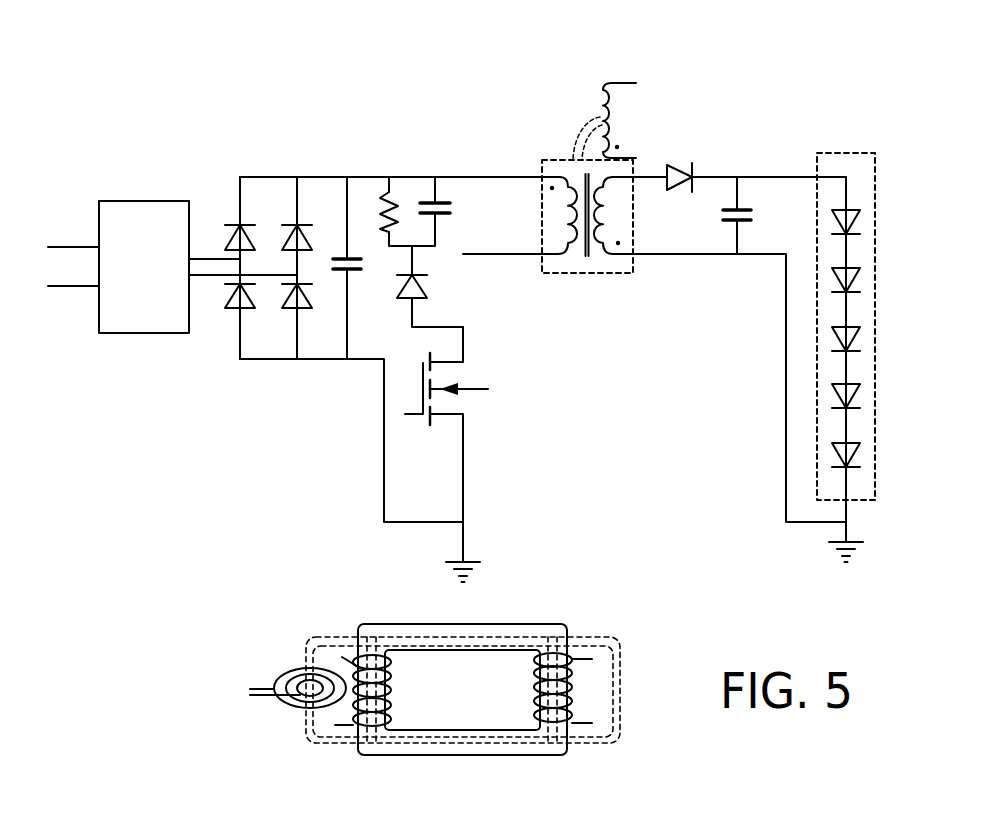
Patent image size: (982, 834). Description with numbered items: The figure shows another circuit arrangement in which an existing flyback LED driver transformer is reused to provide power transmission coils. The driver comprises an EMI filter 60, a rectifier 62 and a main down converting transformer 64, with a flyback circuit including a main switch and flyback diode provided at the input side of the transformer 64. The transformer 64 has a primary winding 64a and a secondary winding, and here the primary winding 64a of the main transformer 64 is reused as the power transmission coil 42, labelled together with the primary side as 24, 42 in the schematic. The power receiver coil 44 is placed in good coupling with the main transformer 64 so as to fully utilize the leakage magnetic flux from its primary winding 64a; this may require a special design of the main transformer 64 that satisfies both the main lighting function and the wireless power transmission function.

The rectifier 62 is at (112, 136).
The EMI filter 60 is at (160, 275).
The power receiver coil 44 is at (622, 80).
The primary winding 24 is at (558, 256).
The power transmission coil 42 is at (456, 451).
The main down converting transformer 64 is at (615, 274).
The primary winding 64a is at (390, 698).